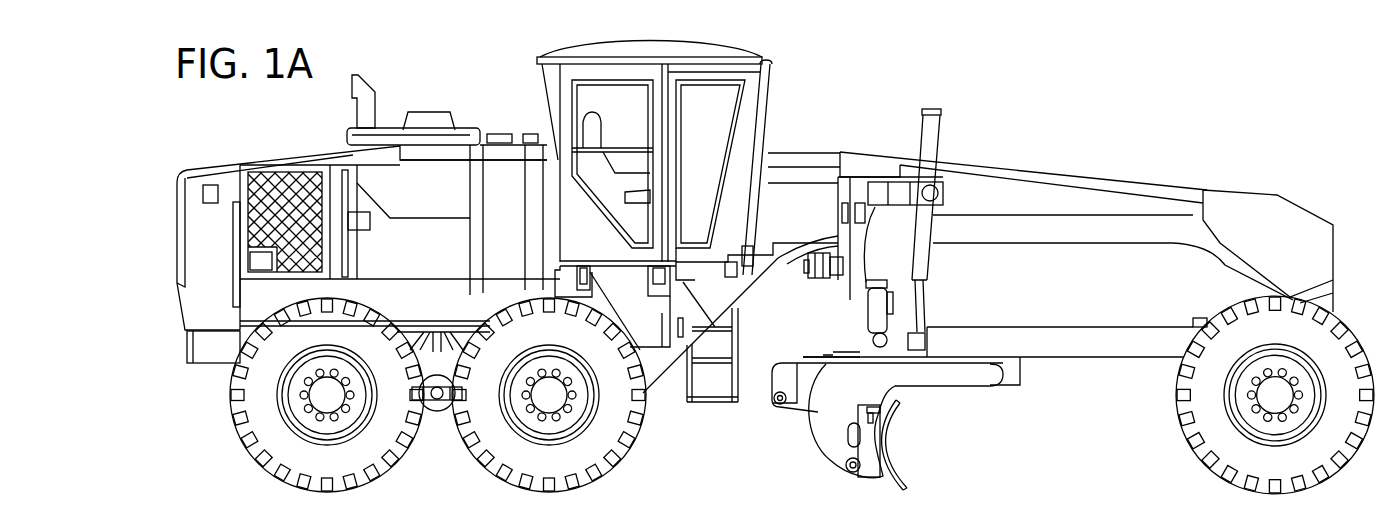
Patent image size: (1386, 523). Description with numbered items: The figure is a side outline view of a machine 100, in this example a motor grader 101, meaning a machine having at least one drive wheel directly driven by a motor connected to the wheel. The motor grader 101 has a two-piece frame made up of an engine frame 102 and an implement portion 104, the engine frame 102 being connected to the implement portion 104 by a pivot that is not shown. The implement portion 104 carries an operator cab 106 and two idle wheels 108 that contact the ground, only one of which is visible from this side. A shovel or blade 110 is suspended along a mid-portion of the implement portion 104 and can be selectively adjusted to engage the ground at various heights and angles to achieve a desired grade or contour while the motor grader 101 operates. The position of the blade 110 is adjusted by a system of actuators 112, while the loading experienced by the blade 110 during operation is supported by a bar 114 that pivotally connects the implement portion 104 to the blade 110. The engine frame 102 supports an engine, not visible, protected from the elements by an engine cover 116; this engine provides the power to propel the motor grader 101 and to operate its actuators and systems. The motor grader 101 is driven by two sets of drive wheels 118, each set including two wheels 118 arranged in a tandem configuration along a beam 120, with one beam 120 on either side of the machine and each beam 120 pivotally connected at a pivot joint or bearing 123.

The machine 100 is at (1033, 102).
The motor grader 101 is at (818, 118).
The engine frame 102 is at (213, 345).
The implement portion 104 is at (1227, 207).
The operator cab 106 is at (580, 52).
The idle wheels 108 is at (1208, 417).
The blade 110 is at (888, 447).
The system of actuators 112 is at (860, 293).
The bar 114 is at (975, 340).
The engine cover 116 is at (280, 177).
The drive wheels 118 is at (298, 453).
The beam 120 is at (440, 402).
The pivot joint or bearing 123 is at (435, 423).